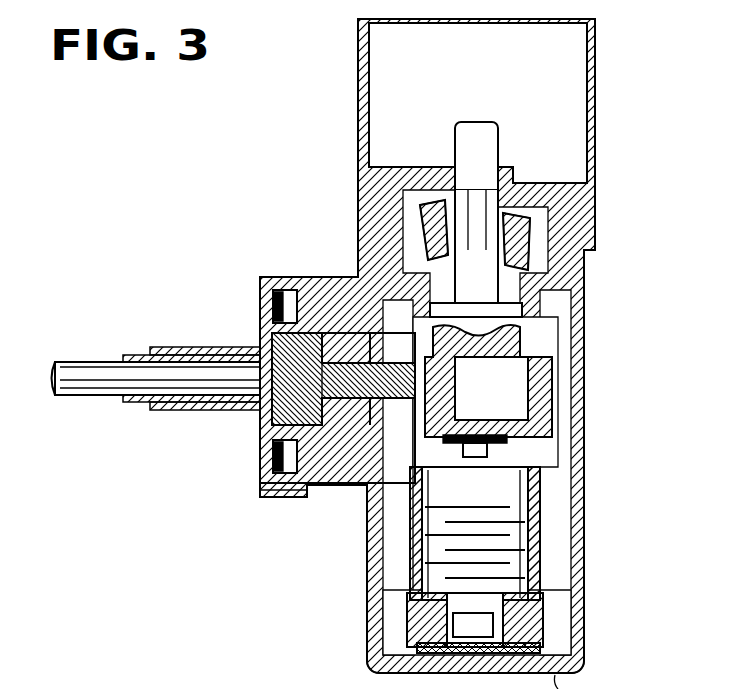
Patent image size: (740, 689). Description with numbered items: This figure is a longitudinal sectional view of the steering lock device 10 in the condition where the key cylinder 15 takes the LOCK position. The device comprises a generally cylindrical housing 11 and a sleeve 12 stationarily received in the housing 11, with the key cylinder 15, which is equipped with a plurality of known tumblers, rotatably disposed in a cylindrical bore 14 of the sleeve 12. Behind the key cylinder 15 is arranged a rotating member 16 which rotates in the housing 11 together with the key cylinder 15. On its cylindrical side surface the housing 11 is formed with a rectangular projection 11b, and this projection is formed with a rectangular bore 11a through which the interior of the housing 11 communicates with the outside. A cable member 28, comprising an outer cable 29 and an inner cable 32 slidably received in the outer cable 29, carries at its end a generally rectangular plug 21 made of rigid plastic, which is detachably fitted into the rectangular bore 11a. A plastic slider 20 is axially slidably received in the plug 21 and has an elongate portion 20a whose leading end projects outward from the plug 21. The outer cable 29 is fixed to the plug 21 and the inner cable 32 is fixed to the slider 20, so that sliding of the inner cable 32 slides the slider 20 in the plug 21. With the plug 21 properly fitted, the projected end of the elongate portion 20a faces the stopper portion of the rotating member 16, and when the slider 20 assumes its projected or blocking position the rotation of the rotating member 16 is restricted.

The steering lock device 10 is at (287, 225).
The housing 11 is at (584, 368).
The rectangular bore 11a is at (322, 492).
The rectangular projection 11b is at (347, 492).
The sleeve 12 is at (553, 597).
The cylindrical bore 14 is at (545, 535).
The key cylinder 15 is at (530, 622).
The rotating member 16 is at (540, 448).
The slider 20 is at (288, 393).
The elongate portion 20a is at (355, 372).
The plug 21 is at (262, 325).
The cable member 28 is at (167, 430).
The outer cable 29 is at (115, 385).
The inner cable 32 is at (250, 337).